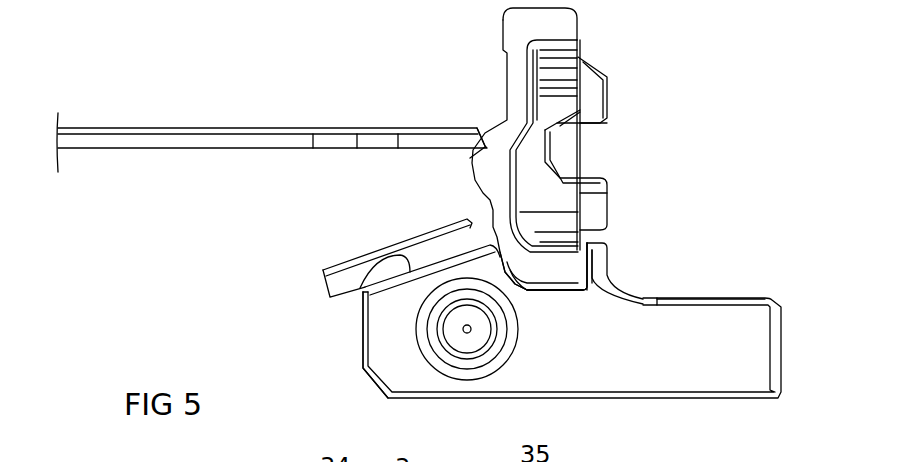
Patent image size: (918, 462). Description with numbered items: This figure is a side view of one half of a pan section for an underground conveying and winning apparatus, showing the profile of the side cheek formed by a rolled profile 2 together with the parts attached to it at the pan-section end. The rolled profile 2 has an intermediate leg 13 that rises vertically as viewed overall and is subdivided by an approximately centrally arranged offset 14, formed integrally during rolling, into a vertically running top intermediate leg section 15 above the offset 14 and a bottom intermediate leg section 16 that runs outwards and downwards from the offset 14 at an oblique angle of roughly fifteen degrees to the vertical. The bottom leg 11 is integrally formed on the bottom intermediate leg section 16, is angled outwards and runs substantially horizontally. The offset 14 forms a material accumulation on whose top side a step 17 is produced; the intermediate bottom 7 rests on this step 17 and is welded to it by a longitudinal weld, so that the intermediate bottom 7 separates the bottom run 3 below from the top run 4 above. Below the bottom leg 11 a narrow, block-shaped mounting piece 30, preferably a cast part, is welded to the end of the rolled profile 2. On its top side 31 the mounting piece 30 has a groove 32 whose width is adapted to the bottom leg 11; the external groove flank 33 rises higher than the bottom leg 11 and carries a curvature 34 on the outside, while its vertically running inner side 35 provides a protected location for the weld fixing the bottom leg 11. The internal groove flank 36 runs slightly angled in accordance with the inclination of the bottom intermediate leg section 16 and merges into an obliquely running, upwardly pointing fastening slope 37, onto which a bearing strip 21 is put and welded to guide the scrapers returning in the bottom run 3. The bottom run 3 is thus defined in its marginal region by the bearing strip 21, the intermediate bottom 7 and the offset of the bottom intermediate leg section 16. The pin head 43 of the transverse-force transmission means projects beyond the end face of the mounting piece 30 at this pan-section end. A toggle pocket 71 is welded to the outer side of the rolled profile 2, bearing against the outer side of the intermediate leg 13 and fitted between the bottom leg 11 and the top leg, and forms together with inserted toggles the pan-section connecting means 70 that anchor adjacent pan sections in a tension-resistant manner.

The rolled profile 2 is at (448, 54).
The bottom run 3 is at (244, 210).
The top run 4 is at (246, 91).
The intermediate bottom 7 is at (160, 148).
The bottom leg 11 is at (562, 272).
The intermediate leg 13 is at (510, 136).
The offset 14 is at (487, 170).
The top intermediate leg section 15 is at (517, 70).
The bottom intermediate leg section 16 is at (443, 228).
The step 17 is at (483, 144).
The bearing strip 21 is at (365, 272).
The mounting piece 30 is at (728, 327).
The top side 31 is at (680, 297).
The groove 32 is at (545, 283).
The external groove flank 33 is at (600, 277).
The curvature 34 is at (623, 280).
The inner side 35 is at (578, 290).
The internal groove flank 36 is at (423, 293).
The fastening slope 37 is at (363, 292).
The pin head 43 is at (450, 337).
The pan-section connecting means 70 is at (640, 113).
The toggle pocket 71 is at (593, 93).